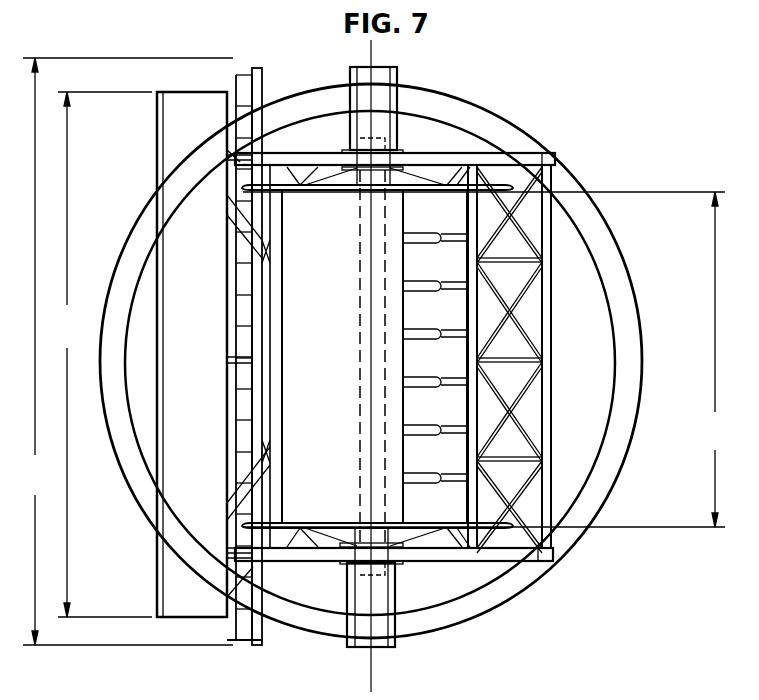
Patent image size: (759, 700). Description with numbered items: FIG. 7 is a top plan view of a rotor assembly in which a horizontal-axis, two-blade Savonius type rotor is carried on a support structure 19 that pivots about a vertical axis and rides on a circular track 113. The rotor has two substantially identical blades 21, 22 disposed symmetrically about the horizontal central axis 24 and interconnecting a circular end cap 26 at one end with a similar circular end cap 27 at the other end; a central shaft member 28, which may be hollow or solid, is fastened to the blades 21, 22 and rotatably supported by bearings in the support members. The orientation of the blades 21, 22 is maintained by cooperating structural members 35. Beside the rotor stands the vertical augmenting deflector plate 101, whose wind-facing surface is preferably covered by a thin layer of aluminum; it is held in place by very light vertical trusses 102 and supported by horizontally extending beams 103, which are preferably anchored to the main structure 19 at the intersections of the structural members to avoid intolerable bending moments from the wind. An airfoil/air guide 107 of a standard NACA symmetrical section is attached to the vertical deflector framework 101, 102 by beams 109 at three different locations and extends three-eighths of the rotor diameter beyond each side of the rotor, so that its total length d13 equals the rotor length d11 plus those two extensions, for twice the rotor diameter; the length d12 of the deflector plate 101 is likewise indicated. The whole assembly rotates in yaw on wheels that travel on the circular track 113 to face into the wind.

The support structure 19 is at (552, 155).
The circular track 113 is at (640, 390).
The central axis 24 is at (373, 661).
The circular end cap 26 is at (536, 563).
The circular end cap 27 is at (506, 183).
The central shaft member 28 is at (362, 230).
The blade 21 is at (315, 422).
The blade 22 is at (446, 422).
The structural member 35 is at (430, 229).
The deflector plate 101 is at (236, 645).
The vertical truss 102 is at (240, 75).
The beam 103 is at (258, 68).
The airfoil/air guide 107 is at (166, 592).
The beam 109 is at (236, 156).
The rotor length dimension d11 is at (487, 359).
The deflector plate length dimension d12 is at (125, 351).
The airfoil/air guide total length d13 is at (101, 354).